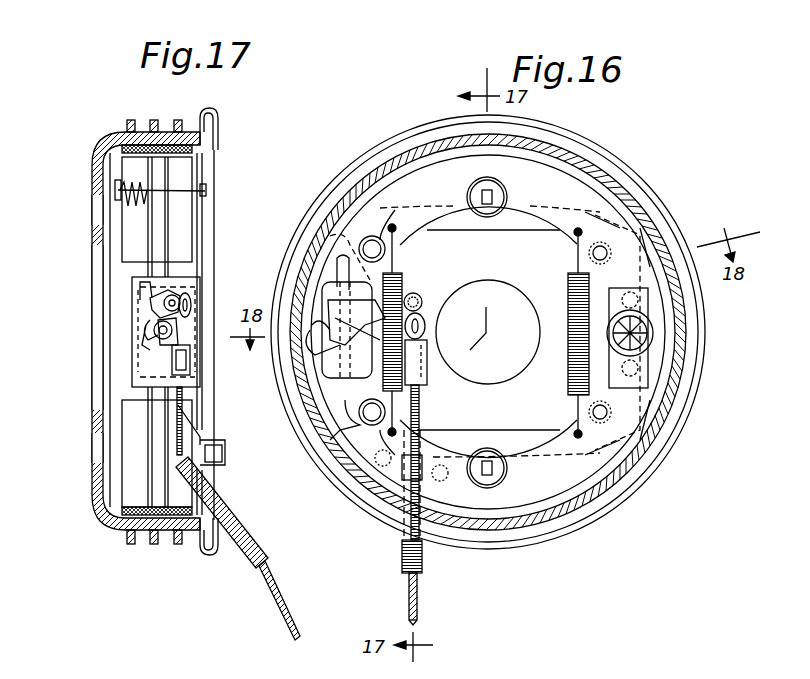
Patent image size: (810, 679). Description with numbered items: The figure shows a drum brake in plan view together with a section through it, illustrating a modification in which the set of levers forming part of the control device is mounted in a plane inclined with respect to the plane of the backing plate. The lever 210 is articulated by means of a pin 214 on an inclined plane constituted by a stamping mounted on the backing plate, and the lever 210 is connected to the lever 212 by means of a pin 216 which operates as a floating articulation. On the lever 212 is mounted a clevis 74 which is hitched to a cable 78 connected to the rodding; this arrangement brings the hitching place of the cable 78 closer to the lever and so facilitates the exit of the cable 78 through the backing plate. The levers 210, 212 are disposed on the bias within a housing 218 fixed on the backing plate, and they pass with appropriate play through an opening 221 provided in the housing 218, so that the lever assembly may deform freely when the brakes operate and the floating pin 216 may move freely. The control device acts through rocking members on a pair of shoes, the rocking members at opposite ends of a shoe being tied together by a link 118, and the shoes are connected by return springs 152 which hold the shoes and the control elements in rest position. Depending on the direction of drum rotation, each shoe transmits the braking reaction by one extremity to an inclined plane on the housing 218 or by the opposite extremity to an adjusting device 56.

In FIG. 16, the adjusting device 56 is at (660, 331).
In FIG. 17, the clevis 74 is at (197, 380).
In FIG. 16, the clevis 74 is at (422, 368).
In FIG. 17, the cable 78 is at (280, 602).
In FIG. 16, the cable 78 is at (418, 589).
In FIG. 16, the link 118 is at (510, 225).
In FIG. 16, the return springs 152 is at (567, 360).
In FIG. 17, the lever 210 is at (185, 290).
In FIG. 16, the lever 210 is at (400, 292).
In FIG. 17, the lever 212 is at (180, 338).
In FIG. 16, the lever 212 is at (375, 350).
In FIG. 17, the pin 214 is at (195, 305).
In FIG. 16, the pin 214 is at (420, 300).
In FIG. 17, the pin 216 is at (138, 331).
In FIG. 16, the pin 216 is at (355, 340).
In FIG. 17, the housing 218 is at (142, 377).
In FIG. 16, the housing 218 is at (322, 290).
In FIG. 17, the opening 221 is at (148, 303).